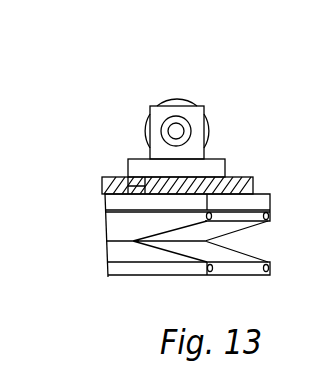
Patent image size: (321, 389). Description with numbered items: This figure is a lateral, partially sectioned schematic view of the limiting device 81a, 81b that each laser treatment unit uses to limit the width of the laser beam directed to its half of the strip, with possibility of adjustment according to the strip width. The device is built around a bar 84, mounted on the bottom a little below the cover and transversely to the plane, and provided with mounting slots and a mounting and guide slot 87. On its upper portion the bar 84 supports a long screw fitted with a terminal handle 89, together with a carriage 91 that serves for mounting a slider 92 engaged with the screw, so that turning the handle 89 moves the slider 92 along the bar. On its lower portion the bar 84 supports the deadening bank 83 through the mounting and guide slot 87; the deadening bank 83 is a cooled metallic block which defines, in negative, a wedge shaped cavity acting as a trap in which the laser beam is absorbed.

The limiting device 81a is at (119, 88).
The limiting device 81b is at (161, 189).
The terminal handle 89 is at (211, 122).
The carriage 91 is at (150, 110).
The slider 92 is at (224, 163).
The bar 84 is at (102, 185).
The mounting and guide slot 87 is at (142, 180).
The deadening bank 83 is at (108, 255).